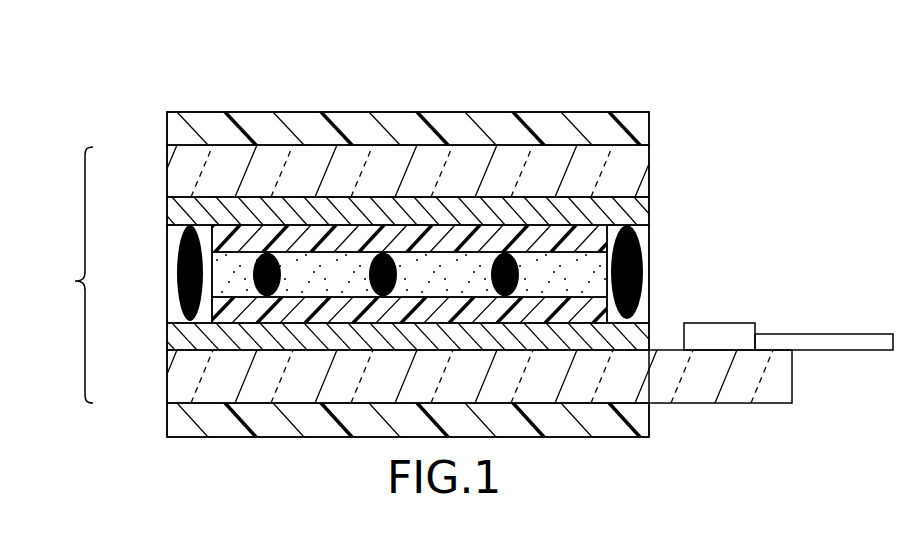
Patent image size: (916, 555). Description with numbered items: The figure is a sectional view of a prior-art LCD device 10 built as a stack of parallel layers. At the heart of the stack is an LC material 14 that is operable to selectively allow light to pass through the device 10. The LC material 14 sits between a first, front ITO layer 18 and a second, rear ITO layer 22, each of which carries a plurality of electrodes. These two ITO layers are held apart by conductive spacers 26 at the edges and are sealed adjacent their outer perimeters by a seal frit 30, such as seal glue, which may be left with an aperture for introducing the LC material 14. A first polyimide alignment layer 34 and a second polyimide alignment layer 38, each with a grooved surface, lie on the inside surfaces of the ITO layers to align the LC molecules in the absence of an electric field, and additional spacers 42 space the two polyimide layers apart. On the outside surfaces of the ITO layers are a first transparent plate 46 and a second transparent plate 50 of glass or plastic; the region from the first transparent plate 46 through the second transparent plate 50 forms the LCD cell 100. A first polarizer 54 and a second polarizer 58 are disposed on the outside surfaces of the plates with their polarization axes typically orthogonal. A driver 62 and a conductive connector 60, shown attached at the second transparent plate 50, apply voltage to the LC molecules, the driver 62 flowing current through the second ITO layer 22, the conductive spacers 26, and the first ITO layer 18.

The LCD device 10 is at (138, 76).
The LCD cell 100 is at (73, 281).
The first polarizer 54 is at (171, 123).
The first transparent plate 46 is at (171, 172).
The first ITO layer 18 is at (171, 215).
The seal frit 30 is at (171, 232).
The first polyimide alignment layer 34 is at (588, 228).
The LC material 14 is at (553, 264).
The second polyimide alignment layer 38 is at (591, 313).
The additional spacers 42 is at (513, 262).
The conductive spacers 26 is at (171, 271).
The second ITO layer 22 is at (171, 341).
The second transparent plate 50 is at (171, 380).
The second polarizer 58 is at (171, 425).
The driver 62 is at (733, 324).
The conductive connector 60 is at (829, 351).